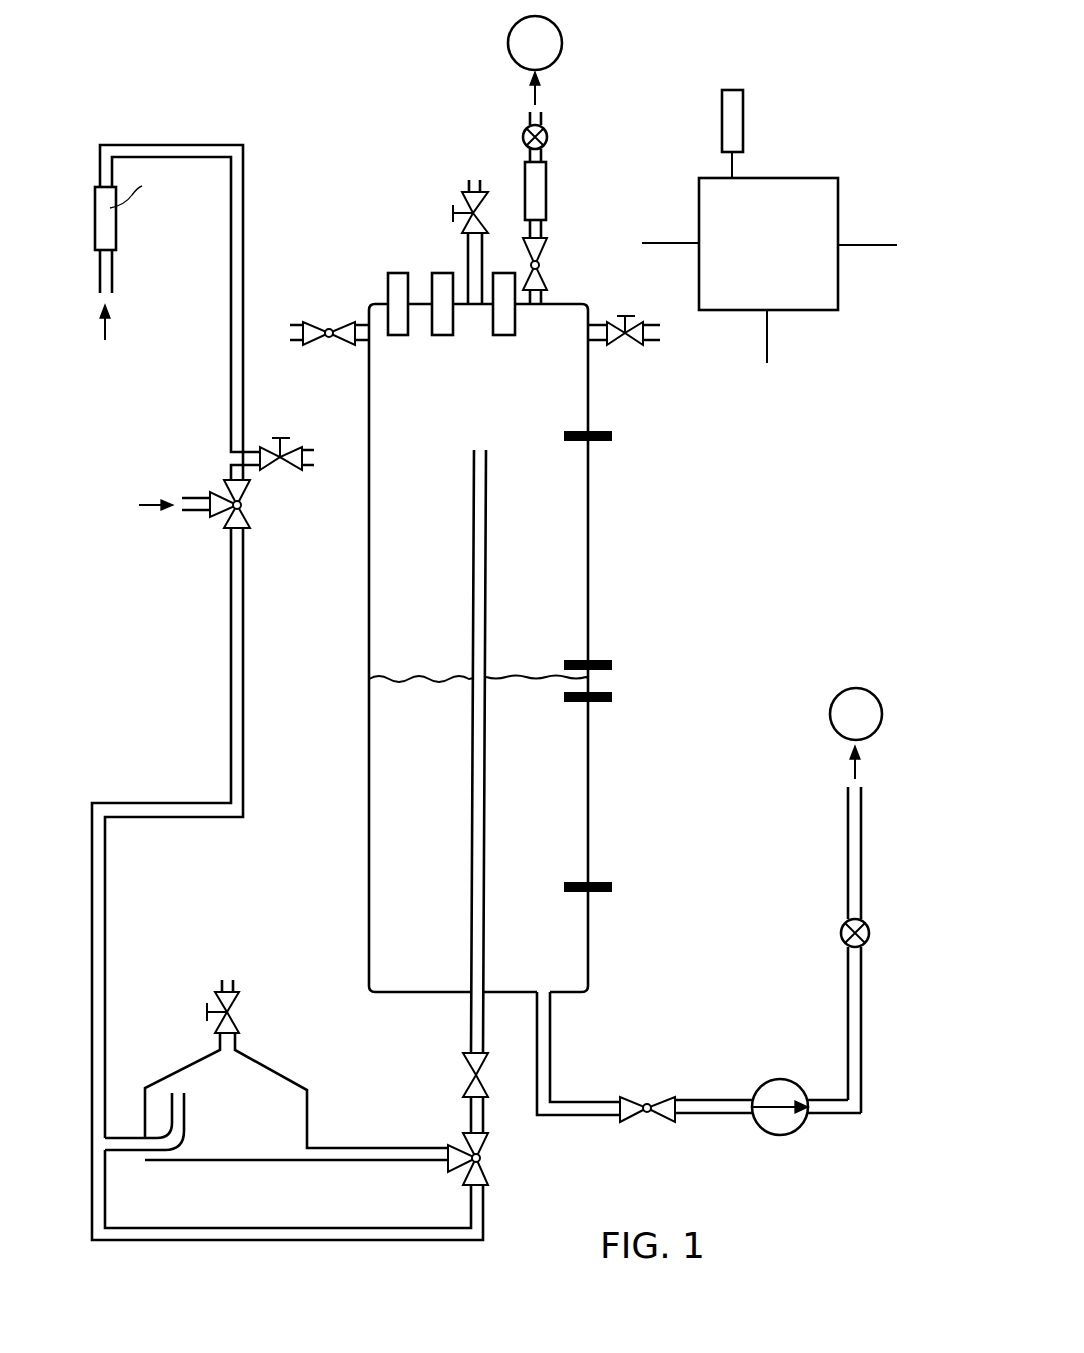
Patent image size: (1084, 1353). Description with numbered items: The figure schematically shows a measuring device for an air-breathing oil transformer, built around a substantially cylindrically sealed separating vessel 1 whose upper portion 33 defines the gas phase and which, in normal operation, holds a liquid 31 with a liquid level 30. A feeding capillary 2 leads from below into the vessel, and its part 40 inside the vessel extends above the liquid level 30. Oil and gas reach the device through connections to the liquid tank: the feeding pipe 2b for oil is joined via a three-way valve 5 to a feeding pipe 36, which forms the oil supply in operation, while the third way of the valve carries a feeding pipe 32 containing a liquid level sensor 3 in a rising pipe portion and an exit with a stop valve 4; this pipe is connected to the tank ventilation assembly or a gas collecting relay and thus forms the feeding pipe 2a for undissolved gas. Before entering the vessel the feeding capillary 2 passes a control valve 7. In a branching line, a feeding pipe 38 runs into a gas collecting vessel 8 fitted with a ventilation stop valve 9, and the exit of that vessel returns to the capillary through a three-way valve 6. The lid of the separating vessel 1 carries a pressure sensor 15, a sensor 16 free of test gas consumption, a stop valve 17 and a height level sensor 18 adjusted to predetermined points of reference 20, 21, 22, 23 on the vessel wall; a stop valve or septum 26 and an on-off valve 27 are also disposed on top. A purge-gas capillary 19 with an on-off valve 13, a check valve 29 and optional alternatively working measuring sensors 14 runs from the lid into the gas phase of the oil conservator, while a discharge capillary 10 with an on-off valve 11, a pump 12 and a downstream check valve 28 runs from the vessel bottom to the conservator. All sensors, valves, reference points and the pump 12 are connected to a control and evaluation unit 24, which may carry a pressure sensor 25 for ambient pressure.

The separating vessel 1 is at (588, 562).
The feeding capillary 2 is at (243, 548).
The feeding pipe for gas 2a is at (101, 335).
The feeding pipe for oil 2b is at (142, 504).
The liquid level sensor 3 is at (116, 220).
The stop valve 4 is at (280, 438).
The three-way valve 5 is at (224, 486).
The three-way valve 6 is at (488, 1158).
The control valve 7 is at (463, 1077).
The gas collecting vessel 8 is at (287, 1078).
The ventilation stop valve 9 is at (233, 1003).
The discharge capillary 10 is at (550, 1062).
The on-off valve 11 is at (647, 1100).
The pump 12 is at (762, 1084).
The on-off valve 13 is at (547, 265).
The measuring sensors 14 is at (546, 190).
The pressure sensor 15 is at (398, 273).
The sensor free of test gas consumption 16 is at (442, 273).
The stop valve 17 is at (453, 213).
The height level sensor 18 is at (503, 273).
The purge-gas capillary 19 is at (541, 115).
The point of reference 20 is at (612, 665).
The point of reference 21 is at (612, 697).
The point of reference 22 is at (612, 887).
The point of reference 23 is at (612, 436).
The control and evaluation unit 24 is at (818, 178).
The pressure sensor 25 is at (743, 120).
The stop valve or septum 26 is at (625, 316).
The on-off valve 27 is at (329, 322).
The check valve 28 is at (841, 933).
The check valve 29 is at (547, 137).
The liquid level 30 is at (400, 678).
The liquid 31 is at (563, 795).
The feeding pipe 32 is at (112, 272).
The upper portion 33 is at (563, 499).
The feeding pipe 36 is at (190, 513).
The feeding pipe 38 is at (120, 1153).
The part of feeding capillary 40 is at (473, 597).